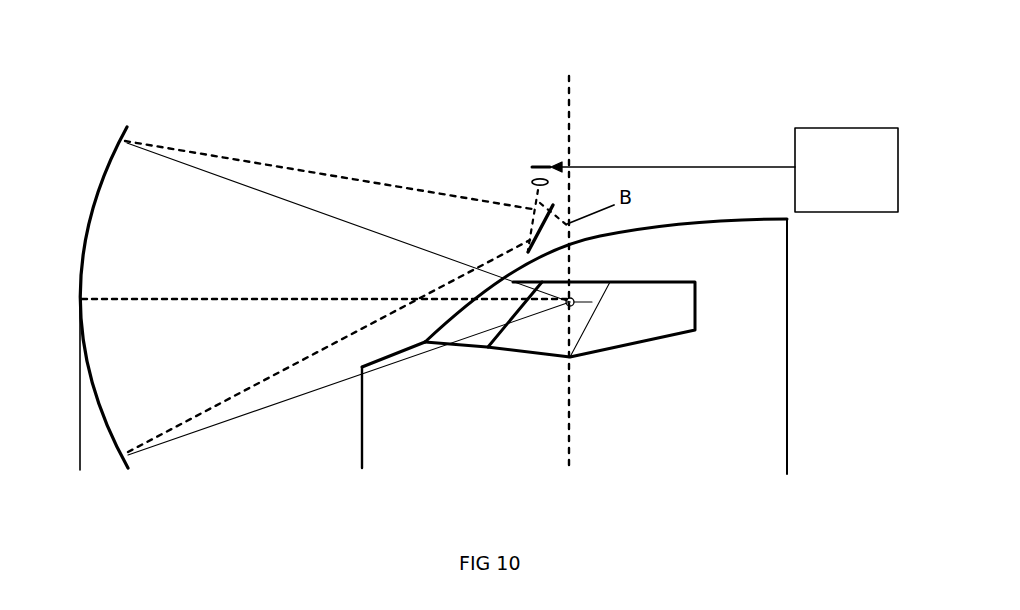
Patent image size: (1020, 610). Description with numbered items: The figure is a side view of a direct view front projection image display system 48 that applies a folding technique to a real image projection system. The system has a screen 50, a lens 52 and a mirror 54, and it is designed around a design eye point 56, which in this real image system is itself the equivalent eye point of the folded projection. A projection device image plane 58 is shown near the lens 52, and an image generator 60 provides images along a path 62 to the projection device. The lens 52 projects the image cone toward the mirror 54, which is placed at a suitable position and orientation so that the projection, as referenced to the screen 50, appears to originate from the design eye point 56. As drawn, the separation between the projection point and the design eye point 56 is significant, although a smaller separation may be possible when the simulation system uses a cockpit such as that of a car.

The direct view front projection image display system 48 is at (598, 113).
The screen 50 is at (110, 156).
The lens 52 is at (532, 180).
The mirror 54 is at (553, 205).
The design eye point 56 is at (574, 304).
The projection device image plane 58 is at (544, 164).
The image generator 60 is at (822, 188).
The path 62 is at (762, 166).